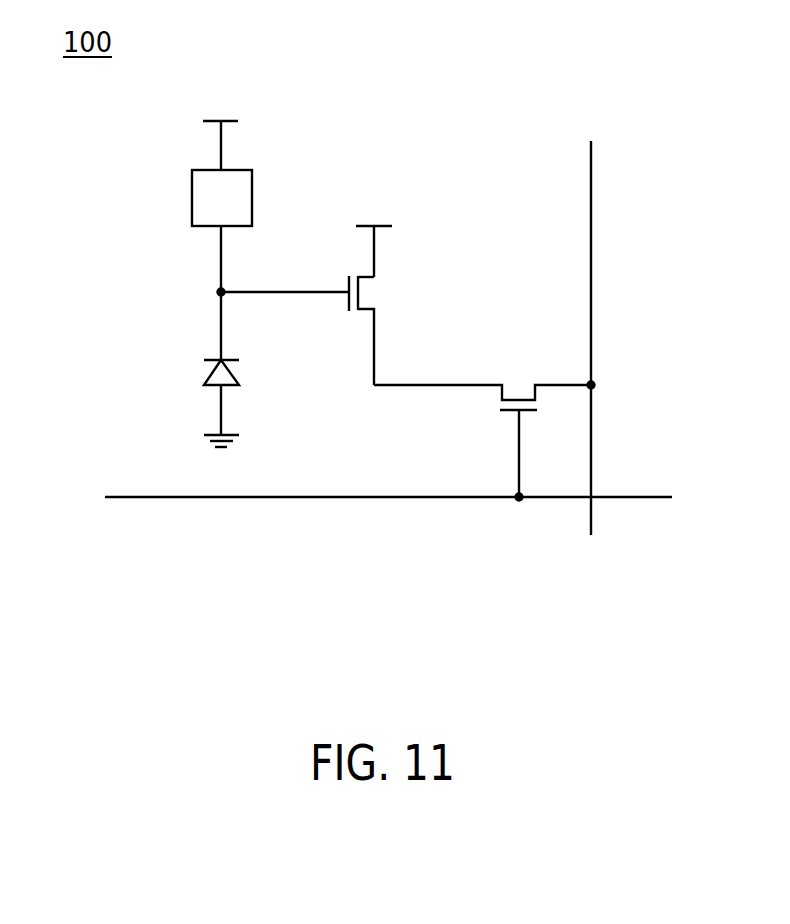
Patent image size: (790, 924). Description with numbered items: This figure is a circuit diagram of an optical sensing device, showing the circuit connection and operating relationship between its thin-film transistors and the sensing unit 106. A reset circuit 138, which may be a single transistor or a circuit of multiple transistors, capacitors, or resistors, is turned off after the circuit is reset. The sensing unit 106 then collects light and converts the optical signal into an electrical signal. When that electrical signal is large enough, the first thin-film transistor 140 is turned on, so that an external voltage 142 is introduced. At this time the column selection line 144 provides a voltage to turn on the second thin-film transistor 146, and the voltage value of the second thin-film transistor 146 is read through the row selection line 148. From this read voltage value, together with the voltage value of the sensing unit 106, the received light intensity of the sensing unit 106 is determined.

The reset circuit 138 is at (192, 199).
The external voltage 142 is at (367, 224).
The first thin-film transistor 140 is at (367, 292).
The sensing unit 106 is at (220, 410).
The second thin-film transistor 146 is at (518, 393).
The column selection line 144 is at (145, 500).
The row selection line 148 is at (593, 516).